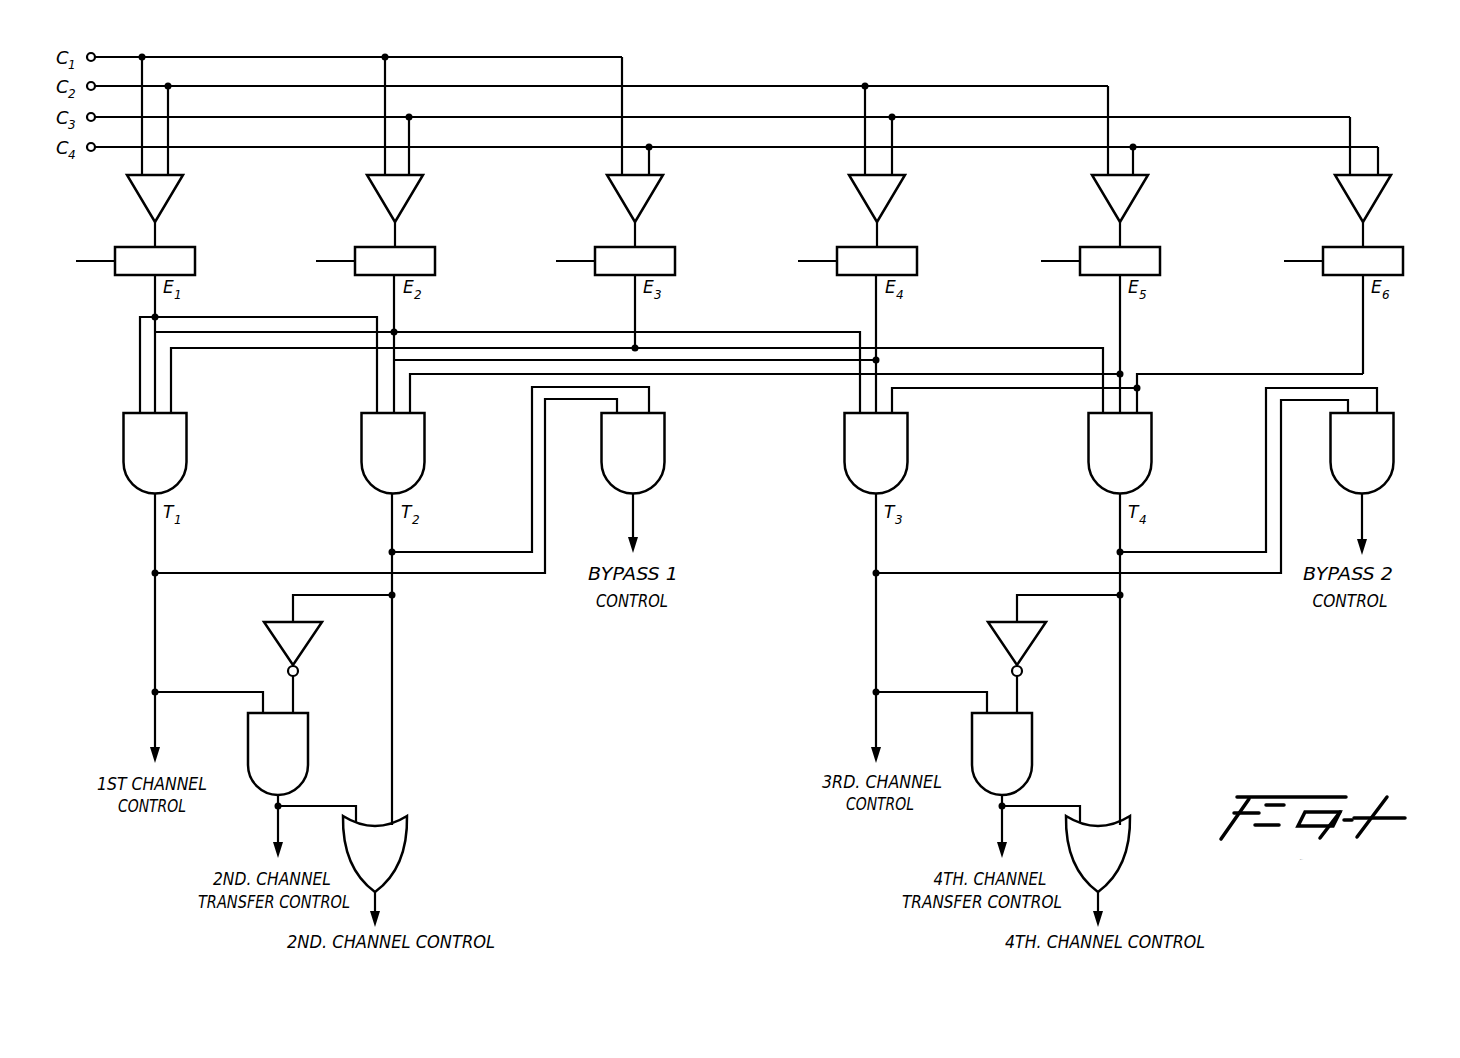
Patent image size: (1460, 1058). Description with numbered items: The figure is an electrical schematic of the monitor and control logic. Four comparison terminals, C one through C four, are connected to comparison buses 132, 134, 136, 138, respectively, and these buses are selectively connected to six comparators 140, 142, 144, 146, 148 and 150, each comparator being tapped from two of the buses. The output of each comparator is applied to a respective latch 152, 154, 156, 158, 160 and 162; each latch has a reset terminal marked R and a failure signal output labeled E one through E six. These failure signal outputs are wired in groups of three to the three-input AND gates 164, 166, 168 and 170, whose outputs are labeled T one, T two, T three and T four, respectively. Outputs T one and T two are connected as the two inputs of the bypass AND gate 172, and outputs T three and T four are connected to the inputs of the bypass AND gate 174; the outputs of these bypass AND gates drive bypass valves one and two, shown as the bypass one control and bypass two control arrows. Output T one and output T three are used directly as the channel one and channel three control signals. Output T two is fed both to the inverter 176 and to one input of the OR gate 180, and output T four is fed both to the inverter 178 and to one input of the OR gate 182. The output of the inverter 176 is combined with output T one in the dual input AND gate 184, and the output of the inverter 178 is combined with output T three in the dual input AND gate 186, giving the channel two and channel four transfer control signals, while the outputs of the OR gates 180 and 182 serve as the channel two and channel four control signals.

The comparison bus 132 is at (625, 72).
The comparison bus 134 is at (733, 89).
The comparison bus 136 is at (948, 121).
The comparison bus 138 is at (1217, 150).
The comparator 140 is at (165, 203).
The comparator 142 is at (404, 206).
The comparator 144 is at (650, 202).
The comparator 146 is at (896, 205).
The comparator 148 is at (1133, 206).
The comparator 150 is at (1378, 203).
The latch 152 is at (196, 249).
The latch 154 is at (436, 250).
The latch 156 is at (676, 257).
The latch 158 is at (918, 257).
The latch 160 is at (1161, 255).
The latch 162 is at (1403, 265).
The AND gate 164 is at (178, 470).
The AND gate 166 is at (418, 470).
The AND gate 168 is at (898, 483).
The AND gate 170 is at (1140, 477).
The bypass AND gate 172 is at (660, 474).
The bypass AND gate 174 is at (1385, 478).
The inverter 176 is at (270, 637).
The inverter 178 is at (995, 637).
The OR gate 180 is at (397, 845).
The OR gate 182 is at (1120, 846).
The dual input AND gate 184 is at (303, 772).
The dual input AND gate 186 is at (1027, 772).